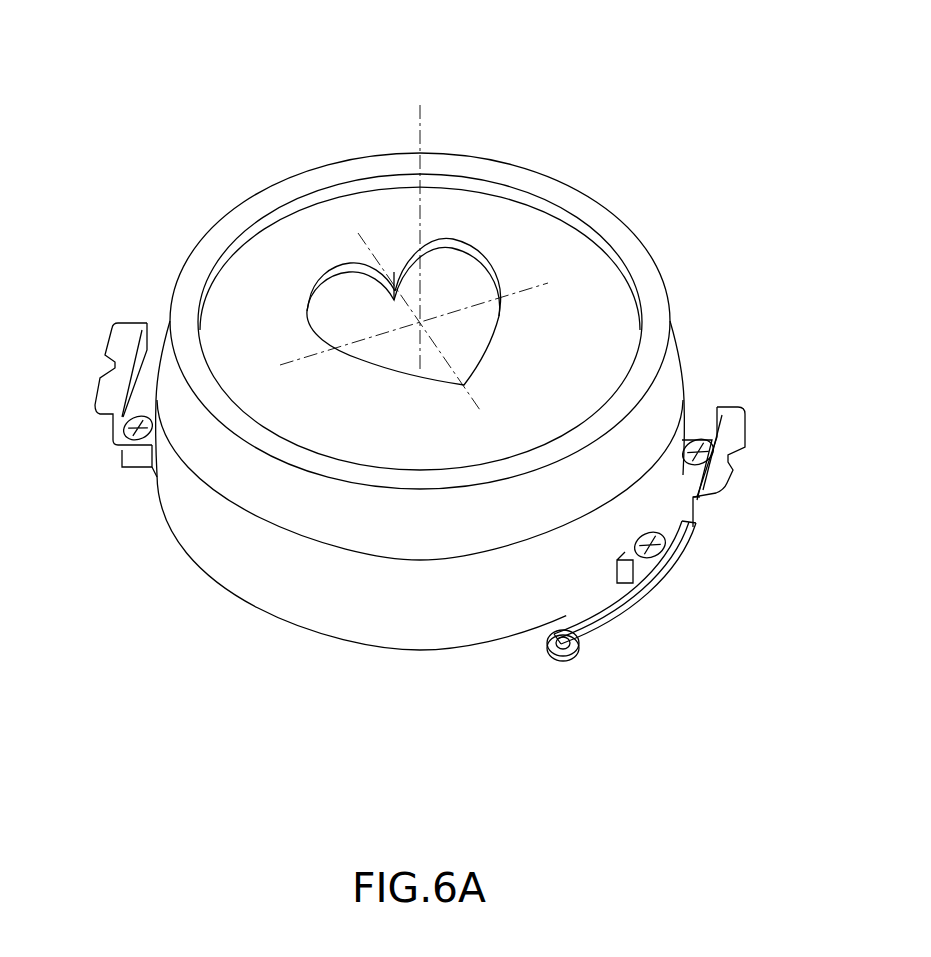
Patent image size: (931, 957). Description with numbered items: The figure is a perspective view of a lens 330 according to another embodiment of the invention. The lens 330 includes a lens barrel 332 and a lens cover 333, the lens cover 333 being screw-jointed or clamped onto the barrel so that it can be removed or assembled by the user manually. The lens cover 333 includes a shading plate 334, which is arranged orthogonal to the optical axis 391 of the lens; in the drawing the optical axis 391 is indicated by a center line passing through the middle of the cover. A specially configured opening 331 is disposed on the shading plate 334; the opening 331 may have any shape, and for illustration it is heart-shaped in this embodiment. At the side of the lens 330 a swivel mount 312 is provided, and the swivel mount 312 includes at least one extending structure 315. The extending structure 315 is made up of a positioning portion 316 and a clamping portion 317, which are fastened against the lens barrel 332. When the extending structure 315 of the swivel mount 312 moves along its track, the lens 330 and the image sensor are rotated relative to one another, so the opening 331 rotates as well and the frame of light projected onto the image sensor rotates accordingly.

The lens 330 is at (86, 34).
The opening 331 is at (333, 310).
The lens barrel 332 is at (185, 519).
The lens cover 333 is at (110, 193).
The shading plate 334 is at (250, 300).
The optical axis 391 is at (419, 125).
The swivel mount 312 is at (730, 427).
The extending structure 315 is at (775, 562).
The positioning portion 316 is at (677, 563).
The clamping portion 317 is at (573, 643).